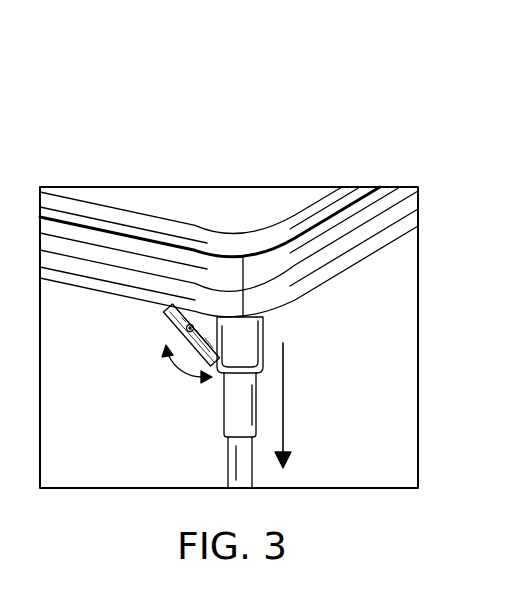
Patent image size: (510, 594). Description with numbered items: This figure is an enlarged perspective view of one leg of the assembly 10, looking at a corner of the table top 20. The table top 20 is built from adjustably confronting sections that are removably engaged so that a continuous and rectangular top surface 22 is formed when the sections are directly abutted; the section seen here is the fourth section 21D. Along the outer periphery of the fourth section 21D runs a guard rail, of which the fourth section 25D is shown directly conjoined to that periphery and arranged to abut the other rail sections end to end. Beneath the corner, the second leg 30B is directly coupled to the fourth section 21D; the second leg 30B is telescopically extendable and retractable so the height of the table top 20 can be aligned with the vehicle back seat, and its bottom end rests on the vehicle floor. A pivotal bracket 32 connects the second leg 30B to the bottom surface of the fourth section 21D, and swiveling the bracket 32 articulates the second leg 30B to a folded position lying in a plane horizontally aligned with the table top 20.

The assembly 10 is at (137, 144).
The table top 20 is at (289, 197).
The top surface 22 is at (185, 198).
The fourth section 21D is at (221, 200).
The fourth section of guard rail 25D is at (249, 239).
The second leg 30B is at (258, 407).
The pivotal bracket 32 is at (188, 331).